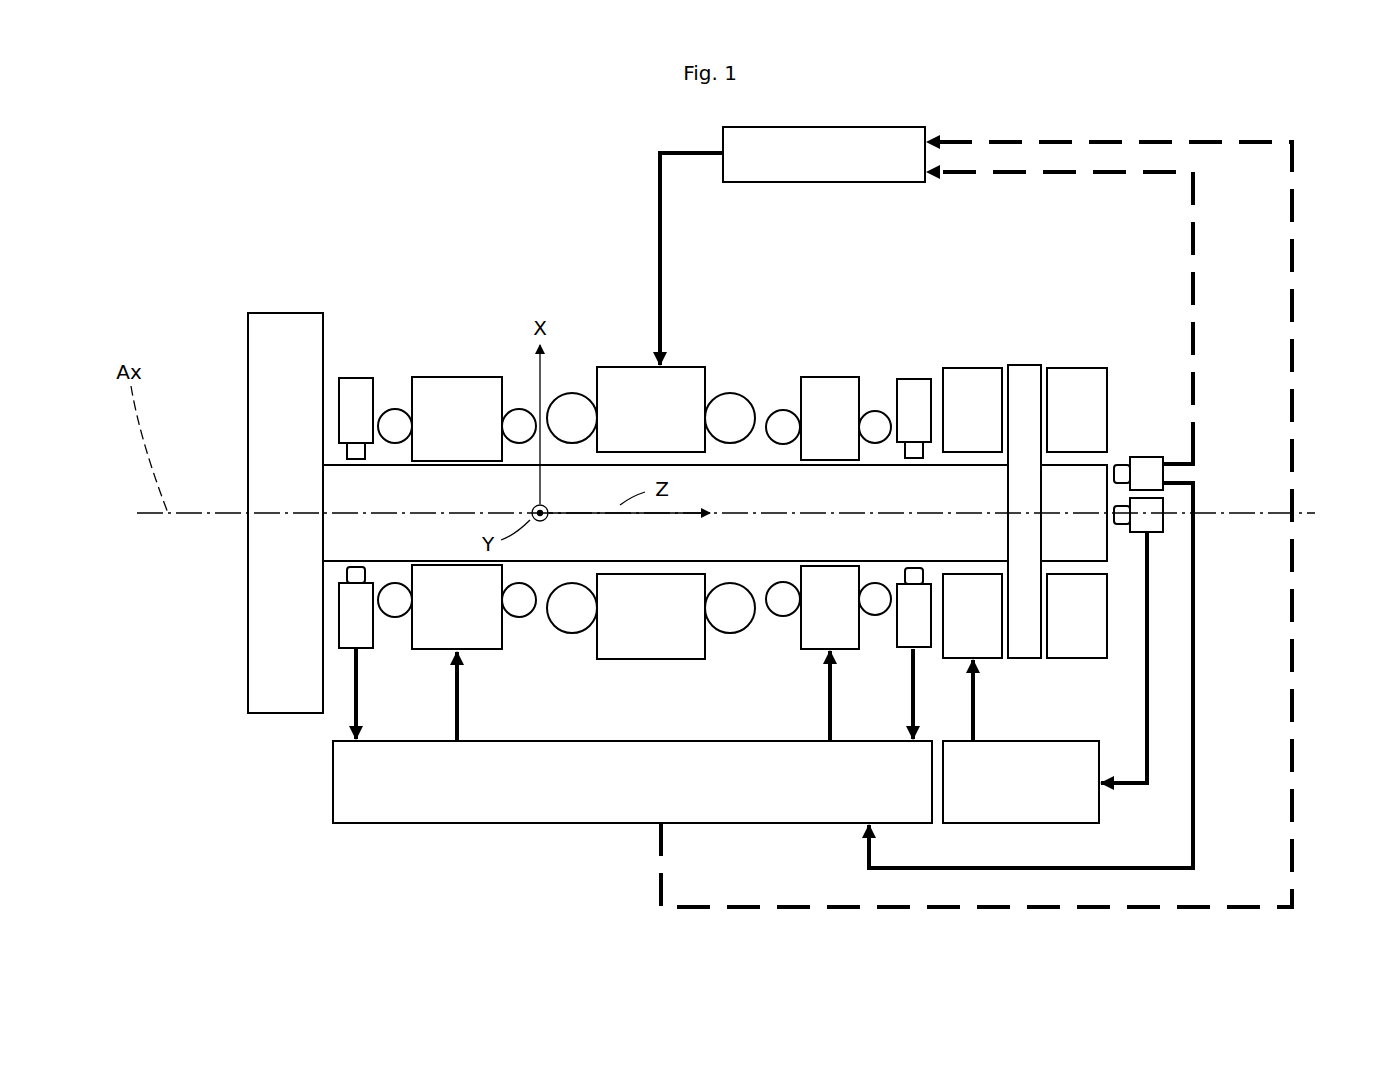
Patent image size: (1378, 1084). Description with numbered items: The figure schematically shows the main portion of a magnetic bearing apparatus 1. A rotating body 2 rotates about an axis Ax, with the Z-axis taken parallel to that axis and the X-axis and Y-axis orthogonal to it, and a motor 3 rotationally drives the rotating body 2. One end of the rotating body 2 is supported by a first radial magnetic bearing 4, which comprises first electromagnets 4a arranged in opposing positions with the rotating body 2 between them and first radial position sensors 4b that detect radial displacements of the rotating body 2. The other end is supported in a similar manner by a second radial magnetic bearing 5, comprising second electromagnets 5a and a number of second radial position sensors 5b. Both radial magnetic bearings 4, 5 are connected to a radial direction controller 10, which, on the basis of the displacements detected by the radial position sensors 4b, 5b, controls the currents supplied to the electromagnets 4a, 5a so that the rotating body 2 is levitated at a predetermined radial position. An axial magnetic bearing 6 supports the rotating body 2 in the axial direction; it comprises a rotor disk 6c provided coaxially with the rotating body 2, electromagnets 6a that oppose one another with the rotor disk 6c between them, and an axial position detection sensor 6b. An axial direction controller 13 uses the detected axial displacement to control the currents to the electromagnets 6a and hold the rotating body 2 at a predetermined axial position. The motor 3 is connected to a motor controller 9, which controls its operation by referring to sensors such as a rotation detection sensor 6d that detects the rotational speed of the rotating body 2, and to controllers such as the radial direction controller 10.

The magnetic bearing apparatus 1 is at (212, 195).
The rotating body 2 is at (758, 465).
The motor 3 is at (628, 362).
The first radial magnetic bearing 4 is at (437, 426).
The first electromagnets 4a is at (484, 370).
The first radial position sensors 4b is at (364, 372).
The second radial magnetic bearing 5 is at (860, 427).
The second electromagnets 5a is at (858, 372).
The second radial position sensors 5b is at (923, 372).
The axial magnetic bearing 6 is at (1096, 444).
The electromagnets 6a is at (1100, 365).
The axial position detection sensor 6b is at (1166, 535).
The rotor disk 6c is at (1028, 365).
The rotation detection sensor 6d is at (1148, 455).
The motor controller 9 is at (760, 183).
The radial direction controller 10 is at (587, 824).
The axial direction controller 13 is at (1018, 741).